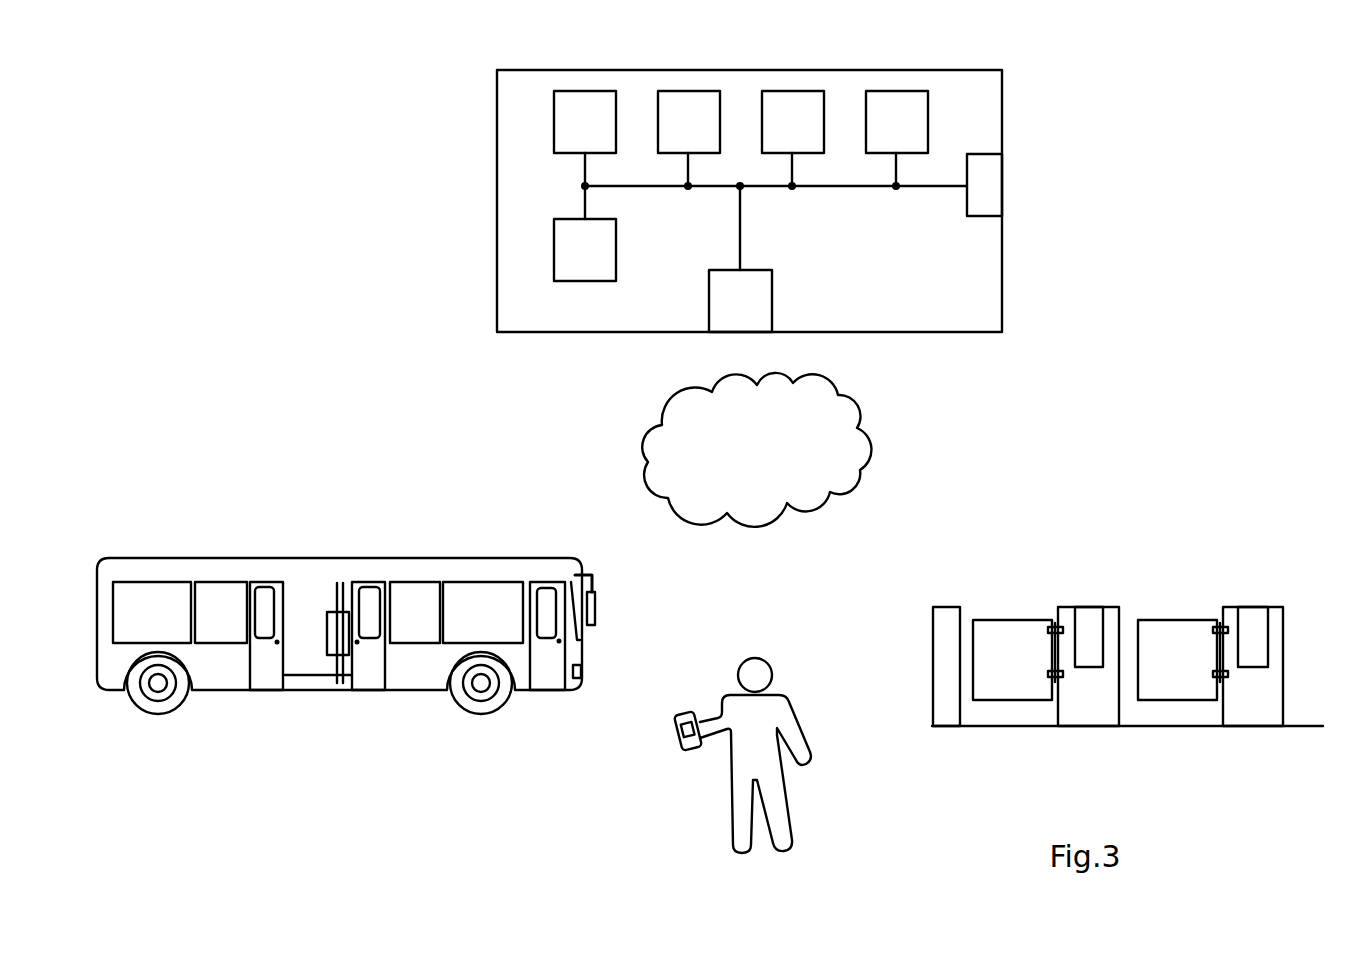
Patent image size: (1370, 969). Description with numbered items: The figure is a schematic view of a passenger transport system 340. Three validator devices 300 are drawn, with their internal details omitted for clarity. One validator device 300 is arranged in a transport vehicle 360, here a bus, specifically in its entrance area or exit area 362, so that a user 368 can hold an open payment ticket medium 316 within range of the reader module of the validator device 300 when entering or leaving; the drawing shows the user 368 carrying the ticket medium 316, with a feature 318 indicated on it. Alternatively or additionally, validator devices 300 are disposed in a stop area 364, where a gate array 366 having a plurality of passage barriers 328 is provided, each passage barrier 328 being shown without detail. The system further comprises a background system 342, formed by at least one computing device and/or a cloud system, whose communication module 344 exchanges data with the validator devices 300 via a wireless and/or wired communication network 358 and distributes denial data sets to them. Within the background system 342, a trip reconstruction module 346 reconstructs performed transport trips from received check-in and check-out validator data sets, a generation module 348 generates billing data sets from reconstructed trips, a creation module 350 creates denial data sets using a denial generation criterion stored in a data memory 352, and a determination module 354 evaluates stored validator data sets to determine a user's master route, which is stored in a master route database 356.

The validator device 300 is at (338, 642).
The open payment ticket medium 316 is at (683, 712).
The display of mobile device 318 is at (678, 739).
The passage barrier 328 is at (992, 564).
The passenger transport system 340 is at (1234, 215).
The background system 342 is at (880, 312).
The communication module 344 is at (719, 312).
The trip reconstruction module 346 is at (564, 262).
The generation module 348 is at (564, 135).
The creation module 350 is at (668, 135).
The data memory 352 is at (772, 135).
The determination module 354 is at (876, 135).
The master route database 356 is at (990, 182).
The communication network 358 is at (732, 456).
The transport vehicle 360 is at (447, 558).
The entrance area or exit area 362 is at (306, 729).
The stop area 364 is at (1206, 561).
The gate array 366 is at (1306, 561).
The user 368 is at (787, 717).